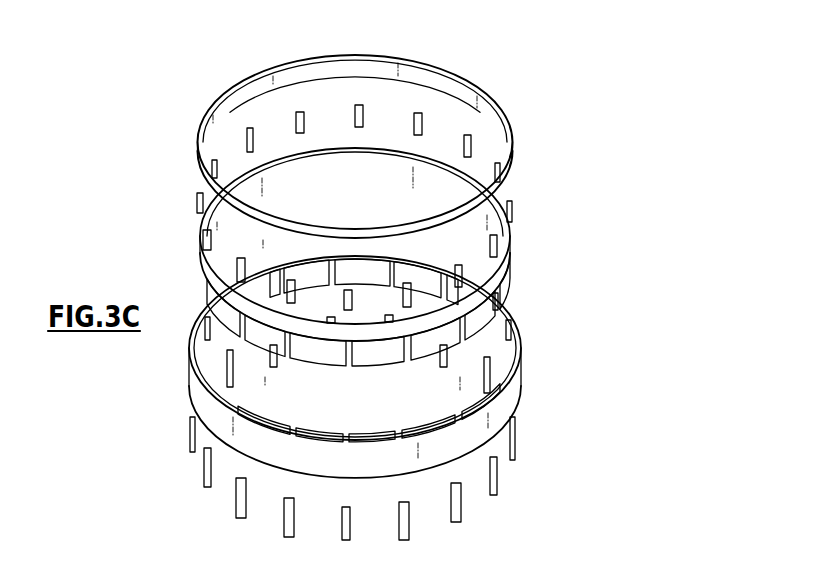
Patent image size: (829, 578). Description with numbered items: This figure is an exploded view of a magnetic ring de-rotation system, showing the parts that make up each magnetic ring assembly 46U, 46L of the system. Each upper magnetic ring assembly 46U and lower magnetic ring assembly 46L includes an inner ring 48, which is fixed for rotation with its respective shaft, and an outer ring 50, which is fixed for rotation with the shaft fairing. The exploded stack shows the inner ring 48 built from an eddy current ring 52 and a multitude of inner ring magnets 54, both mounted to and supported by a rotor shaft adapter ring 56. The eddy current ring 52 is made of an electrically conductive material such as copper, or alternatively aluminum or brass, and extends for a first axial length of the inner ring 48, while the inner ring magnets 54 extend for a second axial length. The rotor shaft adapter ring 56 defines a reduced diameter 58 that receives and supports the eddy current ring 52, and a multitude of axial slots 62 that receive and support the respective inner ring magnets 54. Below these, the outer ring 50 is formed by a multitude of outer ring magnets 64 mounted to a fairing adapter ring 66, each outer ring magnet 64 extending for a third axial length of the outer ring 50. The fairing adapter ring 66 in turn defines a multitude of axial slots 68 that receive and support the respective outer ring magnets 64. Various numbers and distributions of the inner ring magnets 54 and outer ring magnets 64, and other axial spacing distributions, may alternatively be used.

The upper magnetic ring assembly 46U is at (568, 89).
The lower magnetic ring assembly 46L is at (340, 296).
The inner ring 48 is at (149, 200).
The outer ring 50 is at (144, 437).
The eddy current ring 52 is at (477, 96).
The inner ring magnets 54 is at (524, 210).
The rotor shaft adapter ring 56 is at (526, 263).
The reduced diameter 58 is at (490, 285).
The axial slots 62 is at (404, 366).
The outer ring magnets 64 is at (538, 429).
The fairing adapter ring 66 is at (538, 355).
The axial slots 68 is at (348, 438).